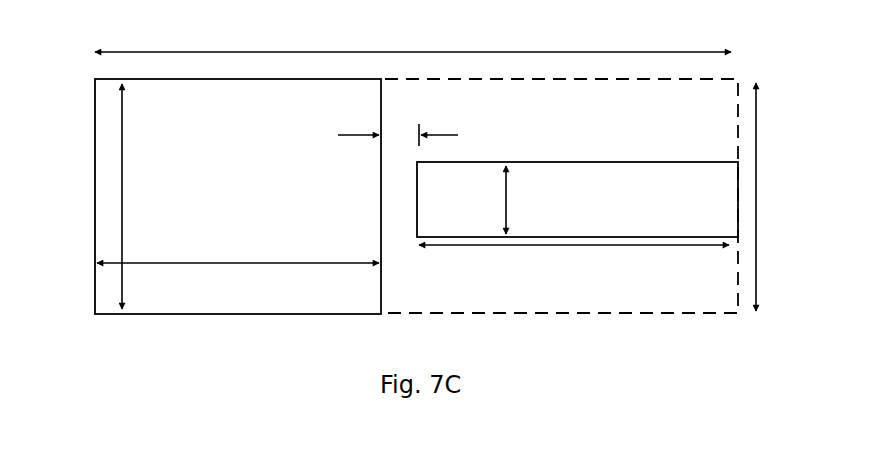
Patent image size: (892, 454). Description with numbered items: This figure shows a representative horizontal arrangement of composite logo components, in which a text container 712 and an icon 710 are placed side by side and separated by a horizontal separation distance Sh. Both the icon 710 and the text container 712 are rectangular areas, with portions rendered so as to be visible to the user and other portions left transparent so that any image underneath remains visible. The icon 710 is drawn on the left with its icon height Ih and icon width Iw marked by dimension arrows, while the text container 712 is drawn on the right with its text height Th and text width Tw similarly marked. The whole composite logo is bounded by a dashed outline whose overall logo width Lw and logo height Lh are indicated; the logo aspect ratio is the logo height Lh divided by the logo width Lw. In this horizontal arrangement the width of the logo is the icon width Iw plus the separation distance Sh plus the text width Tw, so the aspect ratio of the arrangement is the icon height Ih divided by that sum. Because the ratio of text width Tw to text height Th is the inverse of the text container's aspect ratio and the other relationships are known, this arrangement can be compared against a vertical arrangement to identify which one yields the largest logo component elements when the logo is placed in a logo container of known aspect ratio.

The icon 710 is at (229, 289).
The text container 712 is at (613, 184).
The logo width Lw is at (413, 40).
The logo height Lh is at (775, 197).
The icon height Ih is at (166, 196).
The icon width Iw is at (238, 248).
The horizontal separation distance Sh is at (398, 134).
The text height Th is at (522, 200).
The text width Tw is at (574, 259).